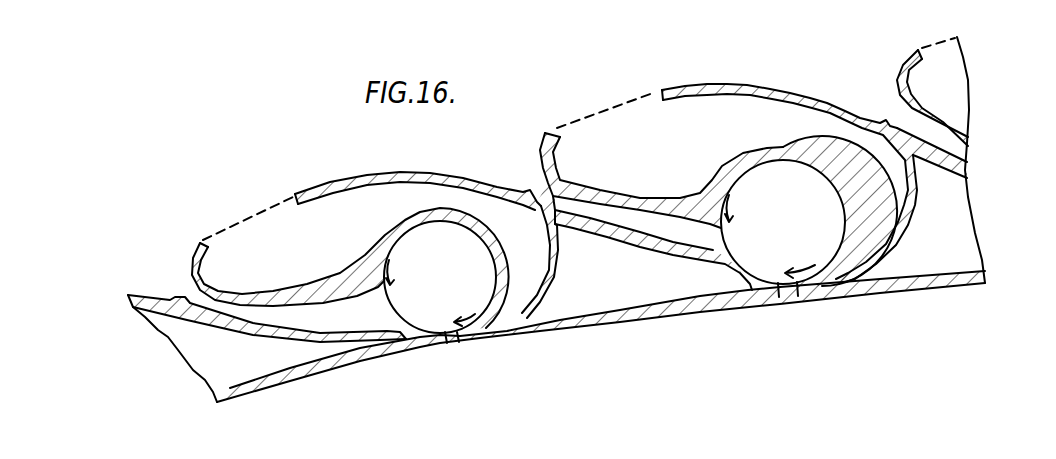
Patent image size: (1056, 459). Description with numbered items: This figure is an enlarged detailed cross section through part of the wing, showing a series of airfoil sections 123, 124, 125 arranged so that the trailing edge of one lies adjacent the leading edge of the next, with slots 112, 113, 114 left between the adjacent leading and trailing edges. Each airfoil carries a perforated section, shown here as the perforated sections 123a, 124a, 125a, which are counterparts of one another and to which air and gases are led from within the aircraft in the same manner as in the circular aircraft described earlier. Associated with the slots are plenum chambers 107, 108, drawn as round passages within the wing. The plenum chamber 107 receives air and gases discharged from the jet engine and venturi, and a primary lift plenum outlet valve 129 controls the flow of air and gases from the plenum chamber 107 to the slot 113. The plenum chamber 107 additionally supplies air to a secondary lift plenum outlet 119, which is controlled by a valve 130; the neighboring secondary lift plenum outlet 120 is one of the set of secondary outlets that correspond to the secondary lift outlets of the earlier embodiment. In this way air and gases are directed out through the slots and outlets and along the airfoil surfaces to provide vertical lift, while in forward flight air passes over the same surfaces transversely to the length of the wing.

The plenum chamber 107 is at (778, 241).
The plenum chamber 108 is at (447, 285).
The slot 112 is at (970, 155).
The slot 113 is at (624, 210).
The slot 114 is at (271, 312).
The secondary lift plenum outlet 119 is at (788, 292).
The secondary lift plenum outlet 120 is at (452, 342).
The airfoil section 123 is at (962, 75).
The perforated section 123a is at (940, 38).
The airfoil section 124 is at (800, 113).
The perforated section 124a is at (620, 97).
The airfoil section 125 is at (375, 197).
The perforated section 125a is at (232, 222).
The primary lift plenum outlet valve 129 is at (389, 260).
The valve 130 is at (475, 314).